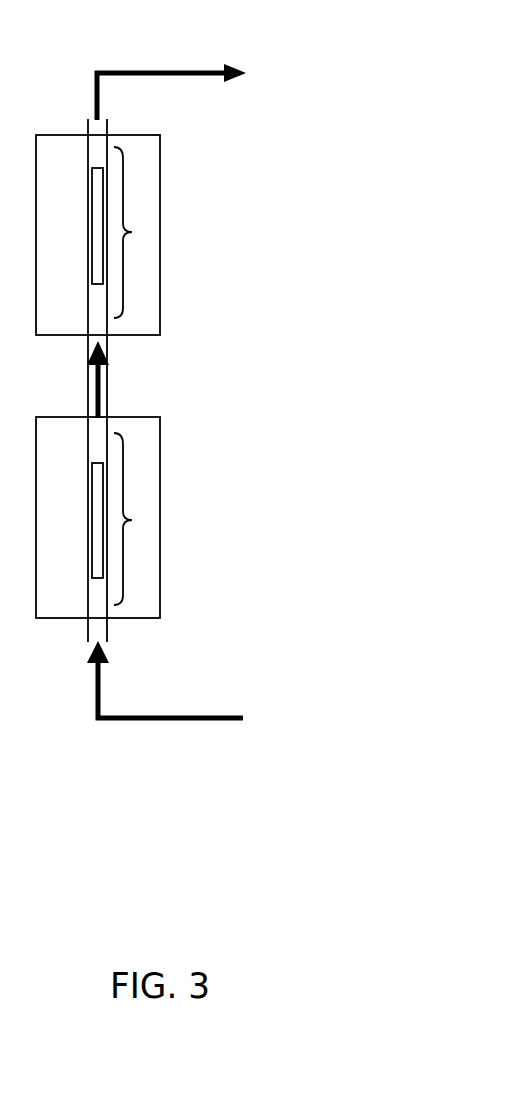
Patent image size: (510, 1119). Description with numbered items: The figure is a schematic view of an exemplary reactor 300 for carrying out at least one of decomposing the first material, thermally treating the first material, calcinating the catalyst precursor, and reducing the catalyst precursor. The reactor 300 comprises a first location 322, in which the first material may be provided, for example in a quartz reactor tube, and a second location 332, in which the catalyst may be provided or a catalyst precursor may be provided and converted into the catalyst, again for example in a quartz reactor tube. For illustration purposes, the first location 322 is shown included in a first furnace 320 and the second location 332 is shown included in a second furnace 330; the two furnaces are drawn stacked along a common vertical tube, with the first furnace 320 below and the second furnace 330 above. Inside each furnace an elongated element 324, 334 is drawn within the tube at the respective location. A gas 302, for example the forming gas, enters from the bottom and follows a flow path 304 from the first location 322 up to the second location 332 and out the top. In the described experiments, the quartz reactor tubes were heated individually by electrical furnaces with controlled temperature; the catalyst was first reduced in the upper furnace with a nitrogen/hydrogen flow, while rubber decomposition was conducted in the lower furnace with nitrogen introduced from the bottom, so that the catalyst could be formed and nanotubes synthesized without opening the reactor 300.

The reactor 300 is at (315, 37).
The gas 302 is at (196, 717).
The flow path 304 is at (108, 391).
The first furnace 320 is at (160, 603).
The first location 322 is at (140, 520).
The first element 324 is at (103, 491).
The second furnace 330 is at (160, 313).
The second location 332 is at (140, 232).
The second element 334 is at (103, 196).